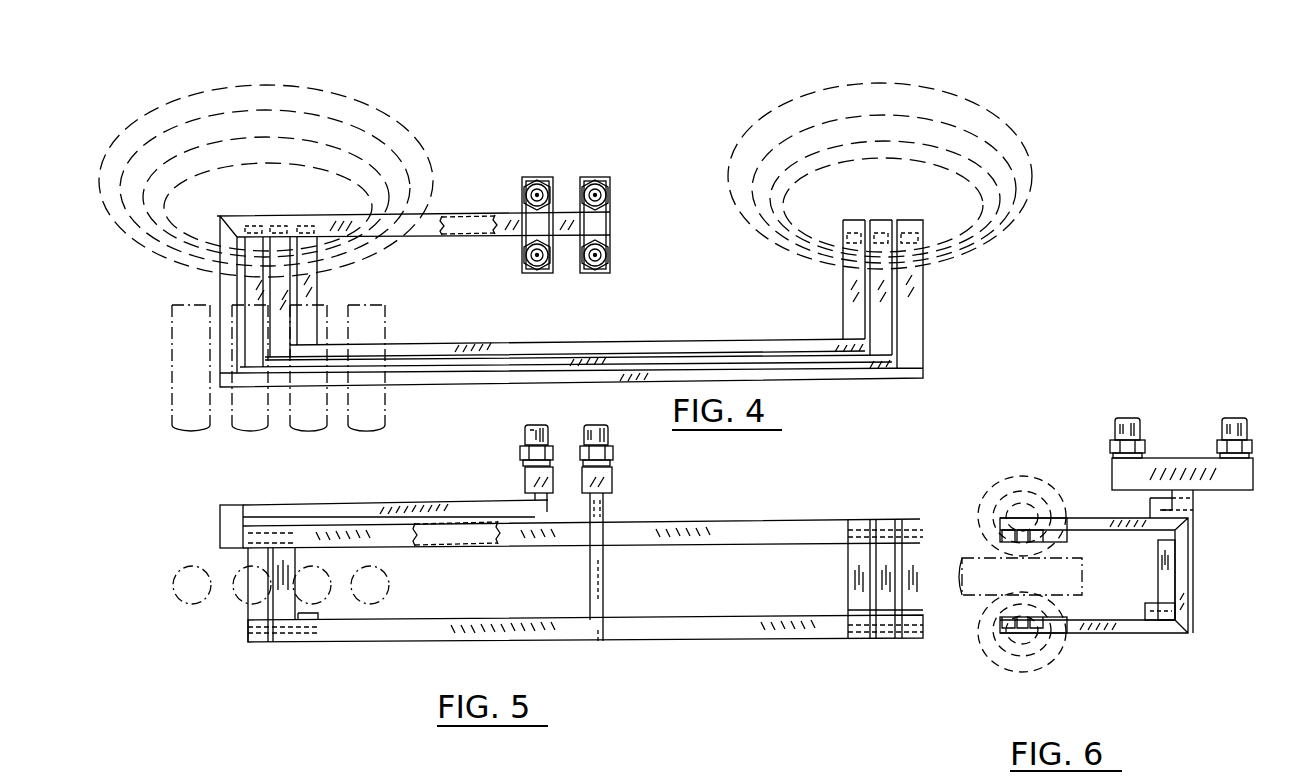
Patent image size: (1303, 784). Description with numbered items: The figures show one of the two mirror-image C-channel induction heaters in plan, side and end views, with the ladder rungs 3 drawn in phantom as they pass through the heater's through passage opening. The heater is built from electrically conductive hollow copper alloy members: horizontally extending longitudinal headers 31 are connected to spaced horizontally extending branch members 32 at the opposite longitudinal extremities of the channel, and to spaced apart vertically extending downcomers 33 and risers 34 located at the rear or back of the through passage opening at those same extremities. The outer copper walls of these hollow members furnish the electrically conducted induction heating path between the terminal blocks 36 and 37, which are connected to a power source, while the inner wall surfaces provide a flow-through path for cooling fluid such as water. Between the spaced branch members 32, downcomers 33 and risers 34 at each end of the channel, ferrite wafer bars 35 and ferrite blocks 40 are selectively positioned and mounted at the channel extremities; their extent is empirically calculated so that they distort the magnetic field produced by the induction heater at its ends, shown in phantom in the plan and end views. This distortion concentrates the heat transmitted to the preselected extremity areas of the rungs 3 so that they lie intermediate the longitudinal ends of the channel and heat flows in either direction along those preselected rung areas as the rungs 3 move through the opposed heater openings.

In FIG. 4, the rungs 3 is at (255, 400).
In FIG. 5, the rungs 3 is at (240, 577).
In FIG. 6, the rungs 3 is at (995, 576).
In FIG. 4, the longitudinal headers 31 is at (487, 214).
In FIG. 5, the longitudinal headers 31 is at (746, 525).
In FIG. 4, the branch members 32 is at (224, 283).
In FIG. 6, the branch members 32 is at (1093, 520).
In FIG. 5, the downcomers 33 is at (848, 562).
In FIG. 6, the downcomers 33 is at (1183, 560).
In FIG. 5, the risers 34 is at (250, 598).
In FIG. 4, the ferrite wafer bars 35 is at (840, 350).
In FIG. 6, the ferrite wafer bars 35 is at (1020, 528).
In FIG. 4, the terminal block 36 is at (538, 182).
In FIG. 5, the terminal block 36 is at (525, 432).
In FIG. 4, the terminal block 37 is at (600, 185).
In FIG. 5, the terminal block 37 is at (610, 432).
In FIG. 6, the terminal block 37 is at (1228, 476).
In FIG. 6, the ferrite blocks 40 is at (1168, 575).